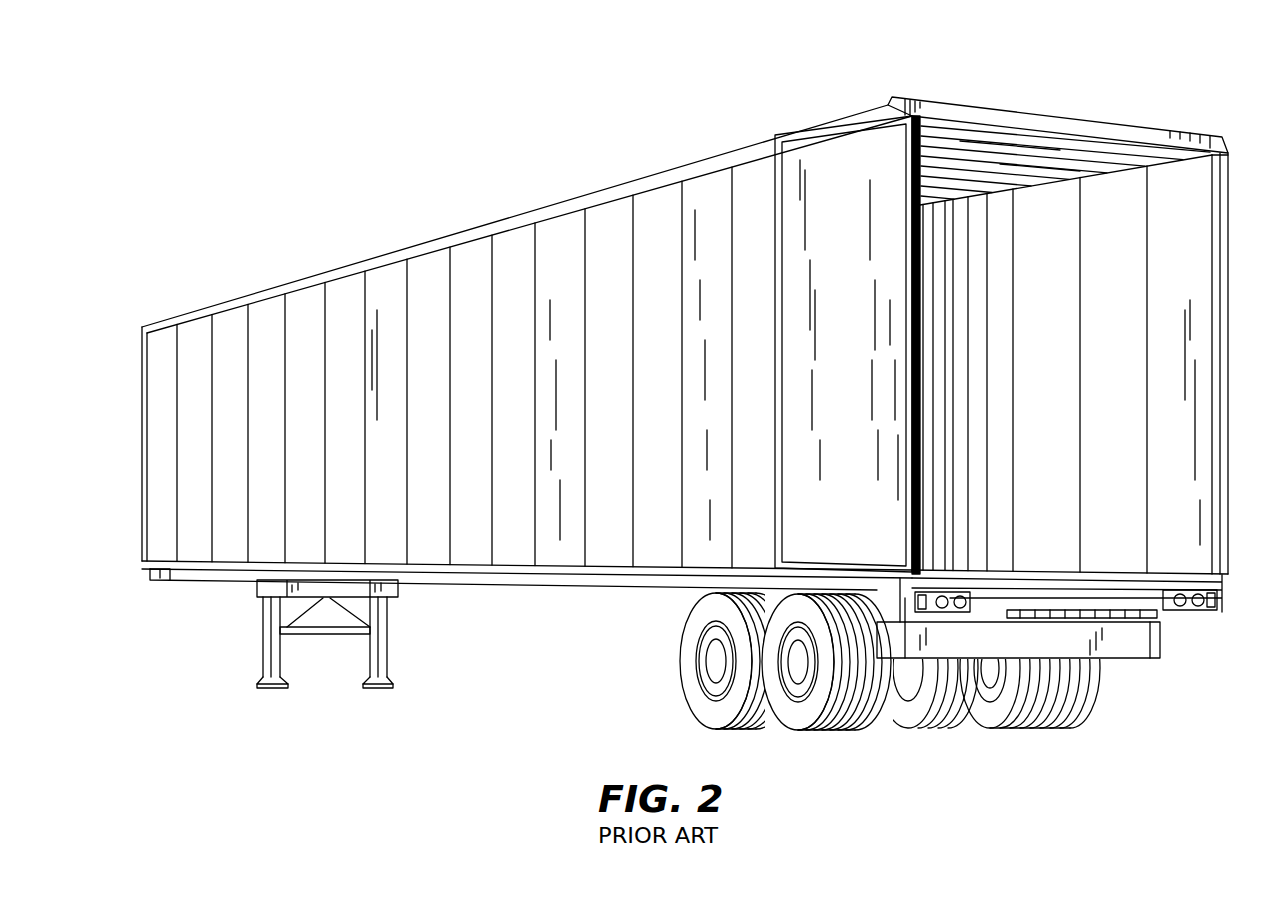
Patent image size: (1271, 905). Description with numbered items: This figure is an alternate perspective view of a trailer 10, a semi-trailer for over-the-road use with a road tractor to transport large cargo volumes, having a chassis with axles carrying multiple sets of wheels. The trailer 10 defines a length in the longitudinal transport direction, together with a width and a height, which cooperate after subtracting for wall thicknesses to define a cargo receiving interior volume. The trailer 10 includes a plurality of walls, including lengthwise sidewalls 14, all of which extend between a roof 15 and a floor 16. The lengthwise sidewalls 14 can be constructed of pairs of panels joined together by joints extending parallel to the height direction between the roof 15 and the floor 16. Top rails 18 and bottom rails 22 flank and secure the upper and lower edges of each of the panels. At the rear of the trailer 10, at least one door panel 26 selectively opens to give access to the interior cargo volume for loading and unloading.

The trailer 10 is at (685, 389).
The lengthwise sidewalls 14 is at (622, 384).
The roof 15 is at (975, 163).
The floor 16 is at (1120, 574).
The top rails 18 is at (610, 190).
The bottom rails 22 is at (520, 563).
The door panel 26 is at (860, 309).